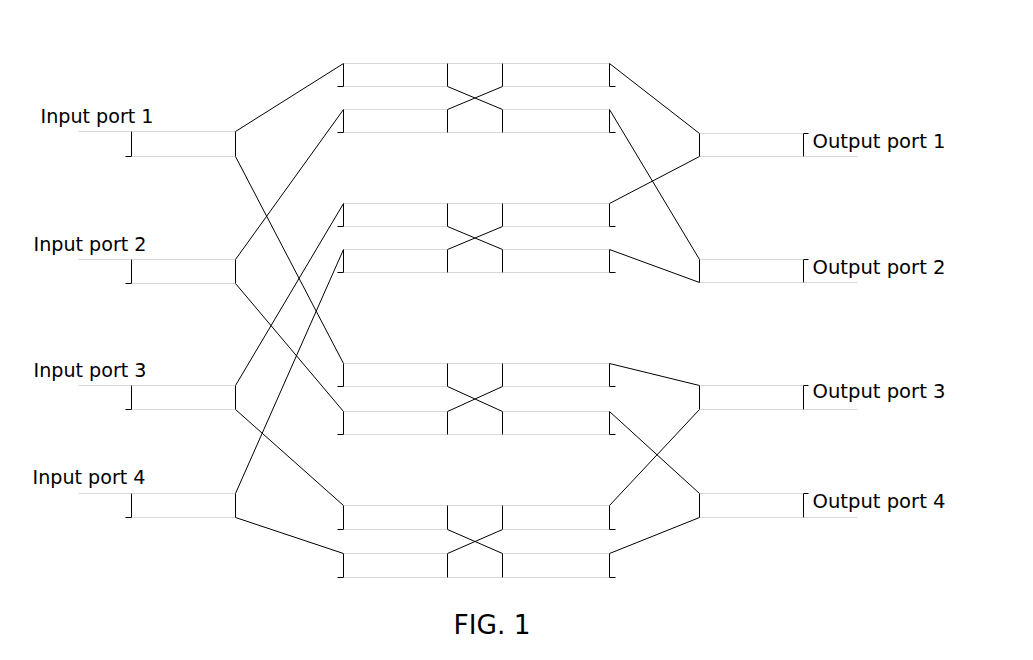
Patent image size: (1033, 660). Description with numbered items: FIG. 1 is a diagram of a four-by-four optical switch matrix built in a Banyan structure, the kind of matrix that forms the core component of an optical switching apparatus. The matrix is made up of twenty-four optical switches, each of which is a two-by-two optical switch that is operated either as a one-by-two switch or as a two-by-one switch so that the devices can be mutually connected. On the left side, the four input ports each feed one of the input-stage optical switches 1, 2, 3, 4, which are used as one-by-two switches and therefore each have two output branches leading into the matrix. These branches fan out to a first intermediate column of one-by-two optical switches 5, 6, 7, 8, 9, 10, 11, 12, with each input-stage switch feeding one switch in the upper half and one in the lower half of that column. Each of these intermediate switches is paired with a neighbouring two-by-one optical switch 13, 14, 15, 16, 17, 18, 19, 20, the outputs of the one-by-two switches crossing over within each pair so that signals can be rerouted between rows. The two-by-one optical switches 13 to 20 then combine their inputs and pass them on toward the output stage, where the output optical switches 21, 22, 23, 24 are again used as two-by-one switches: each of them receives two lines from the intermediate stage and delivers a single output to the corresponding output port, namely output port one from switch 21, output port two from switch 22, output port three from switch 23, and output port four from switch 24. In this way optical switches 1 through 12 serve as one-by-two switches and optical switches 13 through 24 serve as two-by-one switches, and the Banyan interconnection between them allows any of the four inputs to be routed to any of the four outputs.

The optical switch 1 is at (157, 145).
The optical switch 2 is at (157, 273).
The optical switch 3 is at (157, 399).
The optical switch 4 is at (157, 507).
The optical switch 5 is at (393, 76).
The optical switch 6 is at (393, 122).
The optical switch 7 is at (393, 216).
The optical switch 8 is at (393, 262).
The optical switch 9 is at (393, 376).
The optical switch 10 is at (393, 424).
The optical switch 11 is at (393, 519).
The optical switch 12 is at (393, 567).
The optical switch 13 is at (559, 76).
The optical switch 14 is at (559, 122).
The optical switch 15 is at (559, 216).
The optical switch 16 is at (559, 262).
The optical switch 17 is at (559, 376).
The optical switch 18 is at (559, 424).
The optical switch 19 is at (559, 519).
The optical switch 20 is at (559, 567).
The optical switch 21 is at (779, 147).
The optical switch 22 is at (779, 273).
The optical switch 23 is at (779, 399).
The optical switch 24 is at (779, 507).